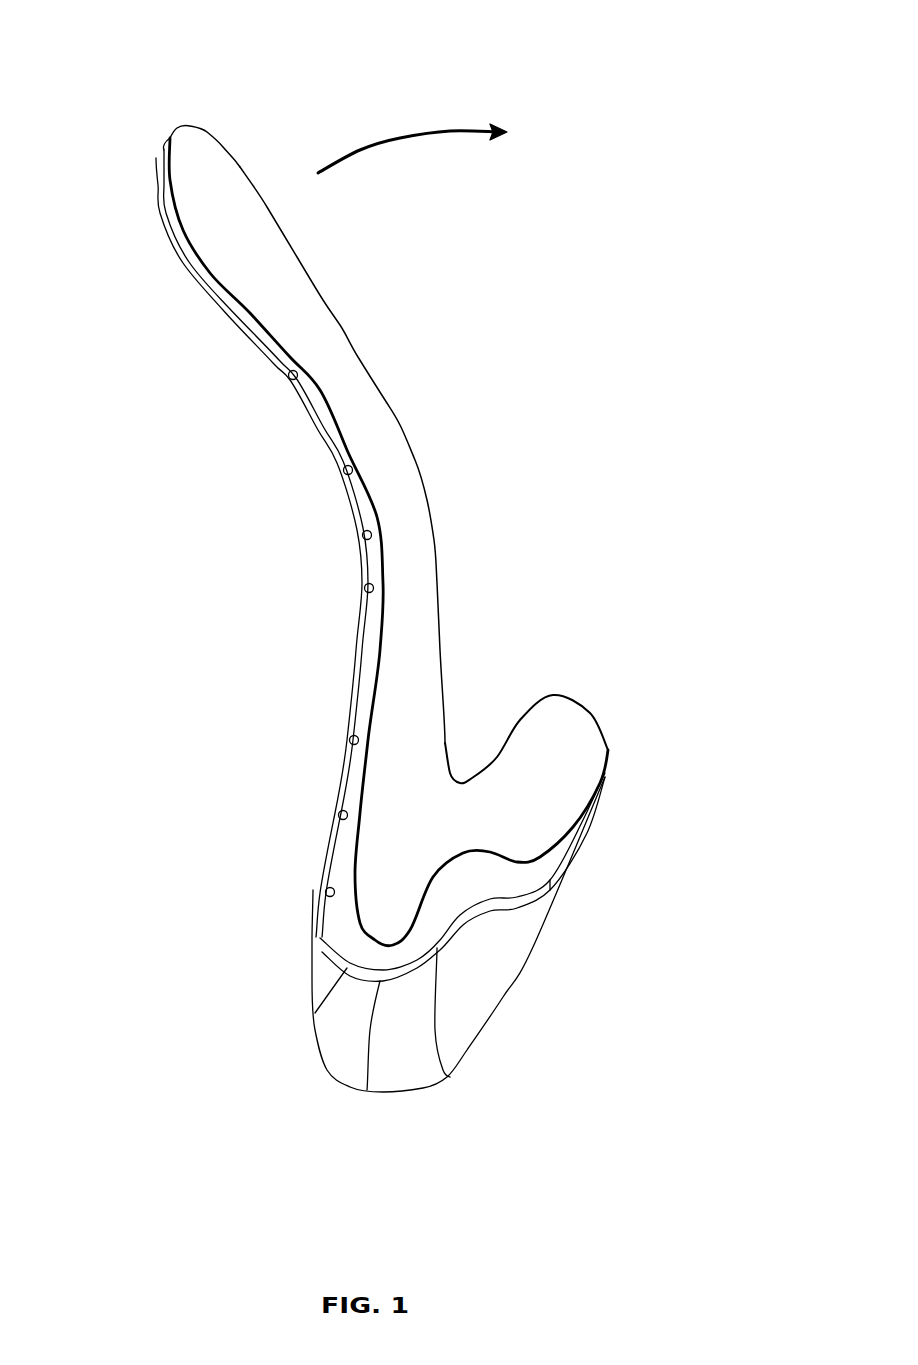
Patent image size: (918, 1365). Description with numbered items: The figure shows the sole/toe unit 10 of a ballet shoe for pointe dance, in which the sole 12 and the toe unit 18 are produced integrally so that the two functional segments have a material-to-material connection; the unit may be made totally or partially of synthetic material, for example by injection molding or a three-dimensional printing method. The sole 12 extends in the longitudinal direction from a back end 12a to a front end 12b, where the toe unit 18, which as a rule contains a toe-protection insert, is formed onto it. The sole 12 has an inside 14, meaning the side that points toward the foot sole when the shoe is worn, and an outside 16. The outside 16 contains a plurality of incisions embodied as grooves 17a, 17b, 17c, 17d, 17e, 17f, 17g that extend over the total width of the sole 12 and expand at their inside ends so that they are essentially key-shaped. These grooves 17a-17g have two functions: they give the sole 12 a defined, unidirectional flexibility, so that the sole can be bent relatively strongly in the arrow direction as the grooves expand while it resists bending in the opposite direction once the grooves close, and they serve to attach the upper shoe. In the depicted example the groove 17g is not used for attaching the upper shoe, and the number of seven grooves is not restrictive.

The sole/toe unit 10 is at (433, 247).
The sole 12 is at (332, 422).
The back end 12a is at (172, 133).
The front end 12b is at (327, 1073).
The inside 14 is at (413, 592).
The outside 16 is at (356, 638).
The groove 17a is at (326, 895).
The groove 17b is at (338, 815).
The groove 17c is at (349, 740).
The groove 17d is at (373, 585).
The groove 17e is at (371, 531).
The groove 17f is at (344, 473).
The groove 17g is at (288, 377).
The toe unit 18 is at (567, 758).